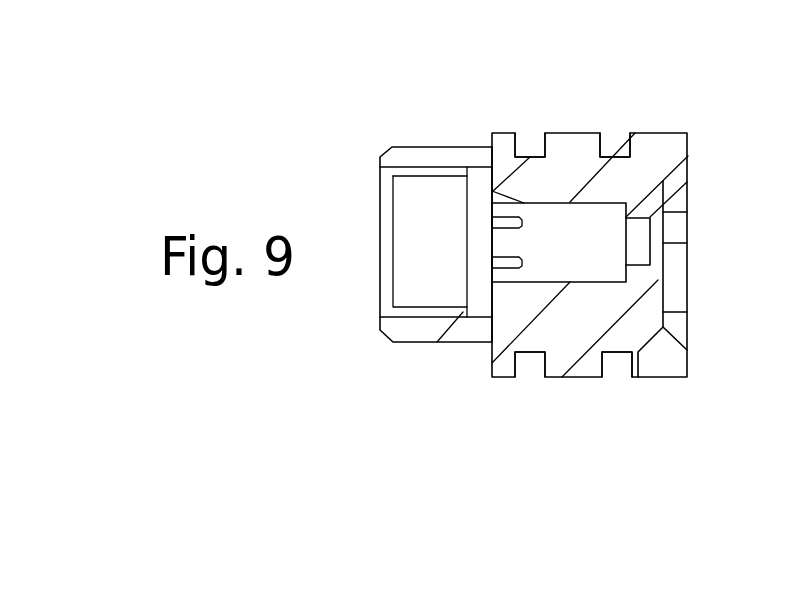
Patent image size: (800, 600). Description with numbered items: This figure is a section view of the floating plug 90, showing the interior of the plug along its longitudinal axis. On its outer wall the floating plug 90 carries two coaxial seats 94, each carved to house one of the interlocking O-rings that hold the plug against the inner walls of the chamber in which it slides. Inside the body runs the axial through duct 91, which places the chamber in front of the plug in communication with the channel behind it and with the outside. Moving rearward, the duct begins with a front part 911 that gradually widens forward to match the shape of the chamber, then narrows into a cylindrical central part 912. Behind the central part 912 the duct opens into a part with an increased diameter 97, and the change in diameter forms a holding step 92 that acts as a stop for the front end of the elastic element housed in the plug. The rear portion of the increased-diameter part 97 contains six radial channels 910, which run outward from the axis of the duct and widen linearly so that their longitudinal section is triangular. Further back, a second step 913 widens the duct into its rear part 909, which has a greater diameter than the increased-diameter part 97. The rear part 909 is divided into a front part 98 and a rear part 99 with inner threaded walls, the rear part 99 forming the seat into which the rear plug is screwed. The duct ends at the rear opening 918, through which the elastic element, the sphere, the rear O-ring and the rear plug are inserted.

The floating plug 90 is at (561, 148).
The axial through duct 91 is at (655, 231).
The front part 911 is at (666, 294).
The cylindrical central part 912 is at (666, 294).
The holding step 92 is at (626, 213).
The seats 94 is at (524, 150).
The part with an increased diameter 97 is at (571, 220).
The front part 98 is at (480, 180).
The rear part 99 is at (410, 182).
The rear part 909 is at (440, 193).
The radial channels 910 is at (498, 197).
The second step 913 is at (503, 175).
The rear opening 918 is at (386, 168).